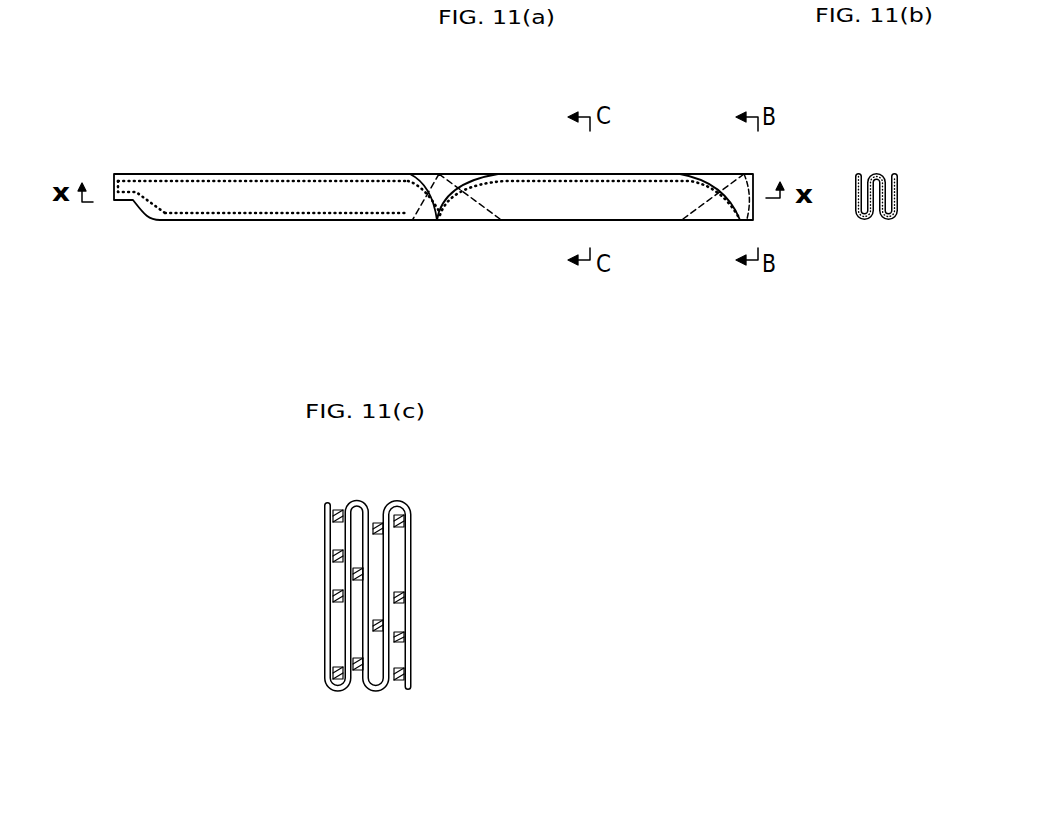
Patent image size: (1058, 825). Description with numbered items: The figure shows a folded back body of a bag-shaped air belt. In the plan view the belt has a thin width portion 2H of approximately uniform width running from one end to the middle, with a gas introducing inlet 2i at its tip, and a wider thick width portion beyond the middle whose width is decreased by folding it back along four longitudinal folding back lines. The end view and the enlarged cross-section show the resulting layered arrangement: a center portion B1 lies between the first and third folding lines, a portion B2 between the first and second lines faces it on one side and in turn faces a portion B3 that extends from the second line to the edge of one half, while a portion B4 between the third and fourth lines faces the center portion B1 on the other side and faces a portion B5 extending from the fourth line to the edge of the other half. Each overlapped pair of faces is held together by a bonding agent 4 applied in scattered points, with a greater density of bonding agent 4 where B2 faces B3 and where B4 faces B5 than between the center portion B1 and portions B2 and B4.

The gas introducing inlet 2i is at (116, 200).
The thin width portion 2H is at (253, 202).
The bonding agent 4 is at (340, 508).
The center portion B1 is at (368, 694).
The portion between folding back lines L1 and L2 B2 is at (338, 535).
The portion from folding back line L2 to end of one half side B3 is at (325, 652).
The portion between folding back lines L3 and L4 B4 is at (410, 560).
The portion from folding back line L4 to end of other half side B5 is at (412, 657).